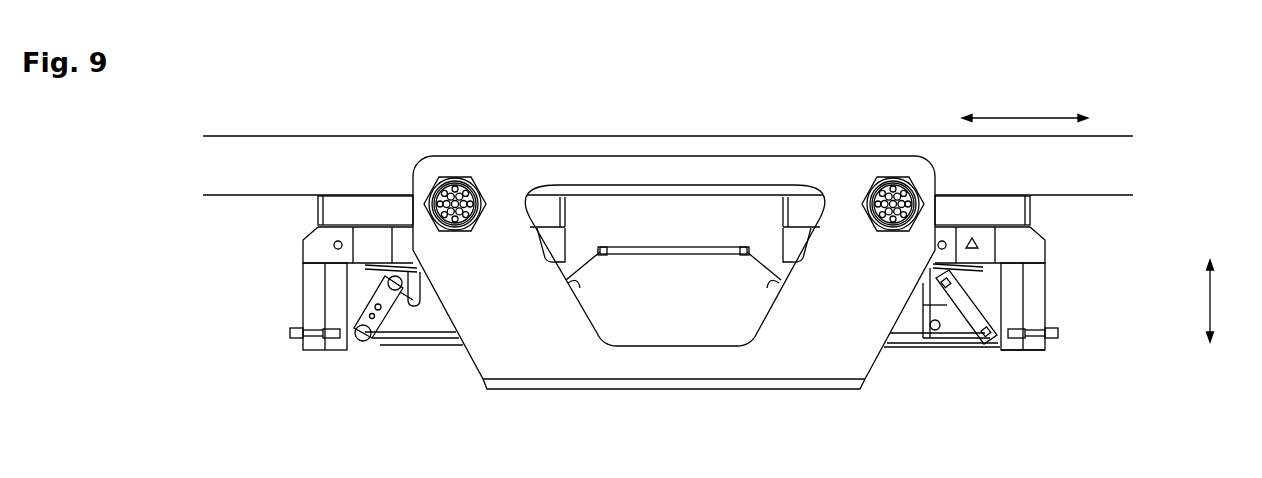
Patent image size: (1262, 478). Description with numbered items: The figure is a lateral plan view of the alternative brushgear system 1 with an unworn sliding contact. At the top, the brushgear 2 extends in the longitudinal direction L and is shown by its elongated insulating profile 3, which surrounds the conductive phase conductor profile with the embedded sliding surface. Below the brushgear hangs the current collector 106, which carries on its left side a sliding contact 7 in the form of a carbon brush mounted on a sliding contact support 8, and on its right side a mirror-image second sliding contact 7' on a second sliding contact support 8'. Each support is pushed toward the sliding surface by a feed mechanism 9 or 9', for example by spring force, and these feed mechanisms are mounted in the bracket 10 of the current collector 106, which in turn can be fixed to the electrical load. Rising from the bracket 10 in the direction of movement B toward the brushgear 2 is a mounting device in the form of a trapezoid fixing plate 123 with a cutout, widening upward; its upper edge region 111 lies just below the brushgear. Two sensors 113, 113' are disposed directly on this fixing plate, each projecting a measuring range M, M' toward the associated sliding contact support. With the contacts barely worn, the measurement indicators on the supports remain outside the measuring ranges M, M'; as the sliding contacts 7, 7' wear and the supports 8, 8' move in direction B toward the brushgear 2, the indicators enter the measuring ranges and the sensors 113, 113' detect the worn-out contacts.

The brushgear system 1 is at (1092, 78).
The brushgear 2 is at (330, 126).
The insulating profile 3 is at (255, 147).
The sliding contact 7 is at (306, 235).
The second sliding contact 7' is at (1044, 231).
The sliding contact support 8 is at (273, 306).
The second sliding contact support 8' is at (1078, 306).
The feed mechanism 9 is at (398, 336).
The second feed mechanism 9' is at (942, 336).
The bracket 10 is at (492, 373).
The current collector 106 is at (1050, 370).
The upper plate portion 111 is at (414, 144).
The sensor 113 is at (453, 145).
The second sensor 113' is at (902, 144).
The fixing plate 123 is at (672, 158).
The measuring range M is at (466, 146).
The measuring range of the second sensor M' is at (881, 146).
The longitudinal direction L is at (1025, 109).
The direction of movement B is at (1219, 301).